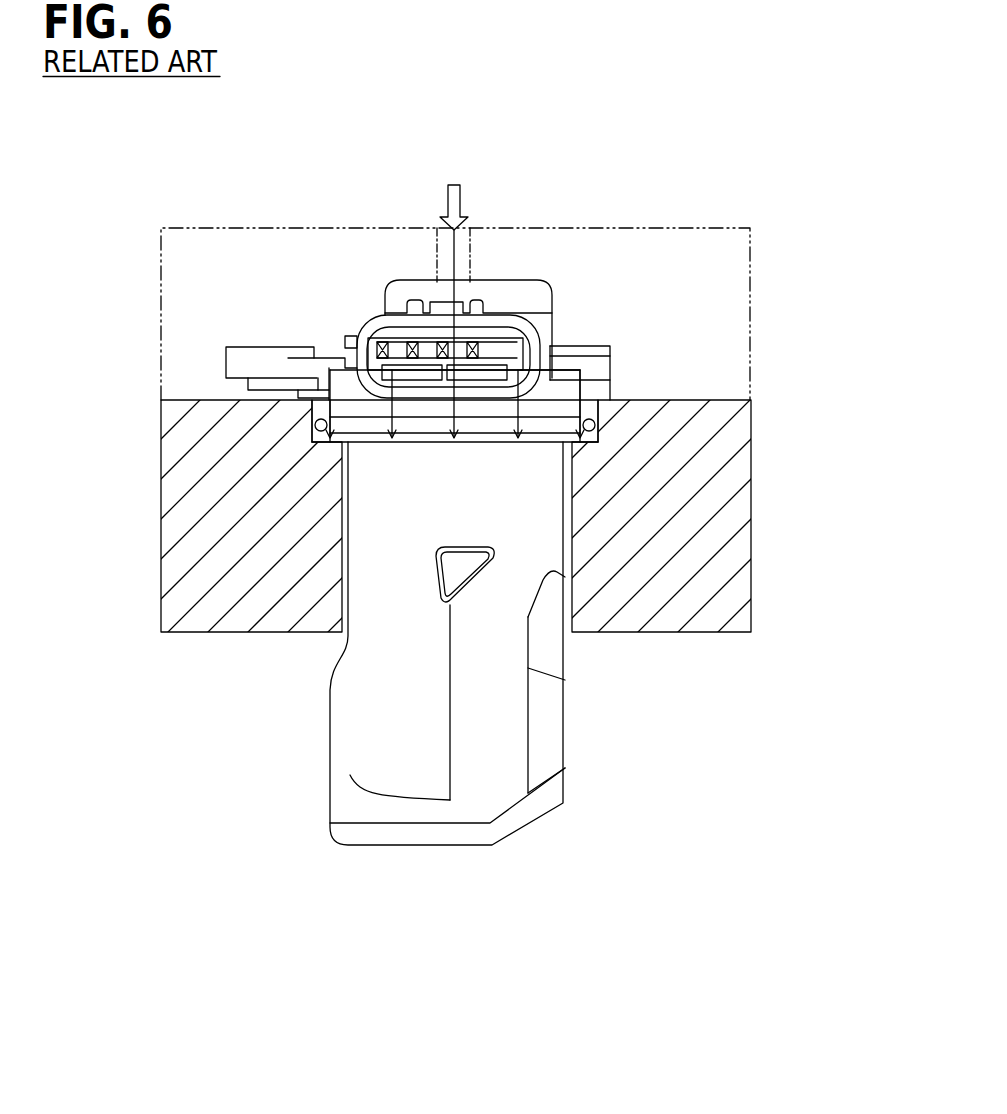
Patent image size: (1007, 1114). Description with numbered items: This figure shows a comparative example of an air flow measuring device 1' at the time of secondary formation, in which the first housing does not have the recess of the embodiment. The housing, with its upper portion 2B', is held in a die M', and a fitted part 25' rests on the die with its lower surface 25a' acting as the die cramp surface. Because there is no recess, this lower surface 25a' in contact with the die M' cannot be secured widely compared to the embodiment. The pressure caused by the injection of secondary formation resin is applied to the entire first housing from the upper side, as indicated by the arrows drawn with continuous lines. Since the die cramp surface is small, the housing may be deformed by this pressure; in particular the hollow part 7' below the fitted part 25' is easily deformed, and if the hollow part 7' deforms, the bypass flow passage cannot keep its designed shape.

The flow measuring device 1' is at (478, 552).
The connector housing 2B' is at (487, 287).
The hollow part 7' is at (604, 643).
The fitted part 25' is at (344, 421).
The lower surface 25a' is at (338, 462).
The die M' is at (500, 439).